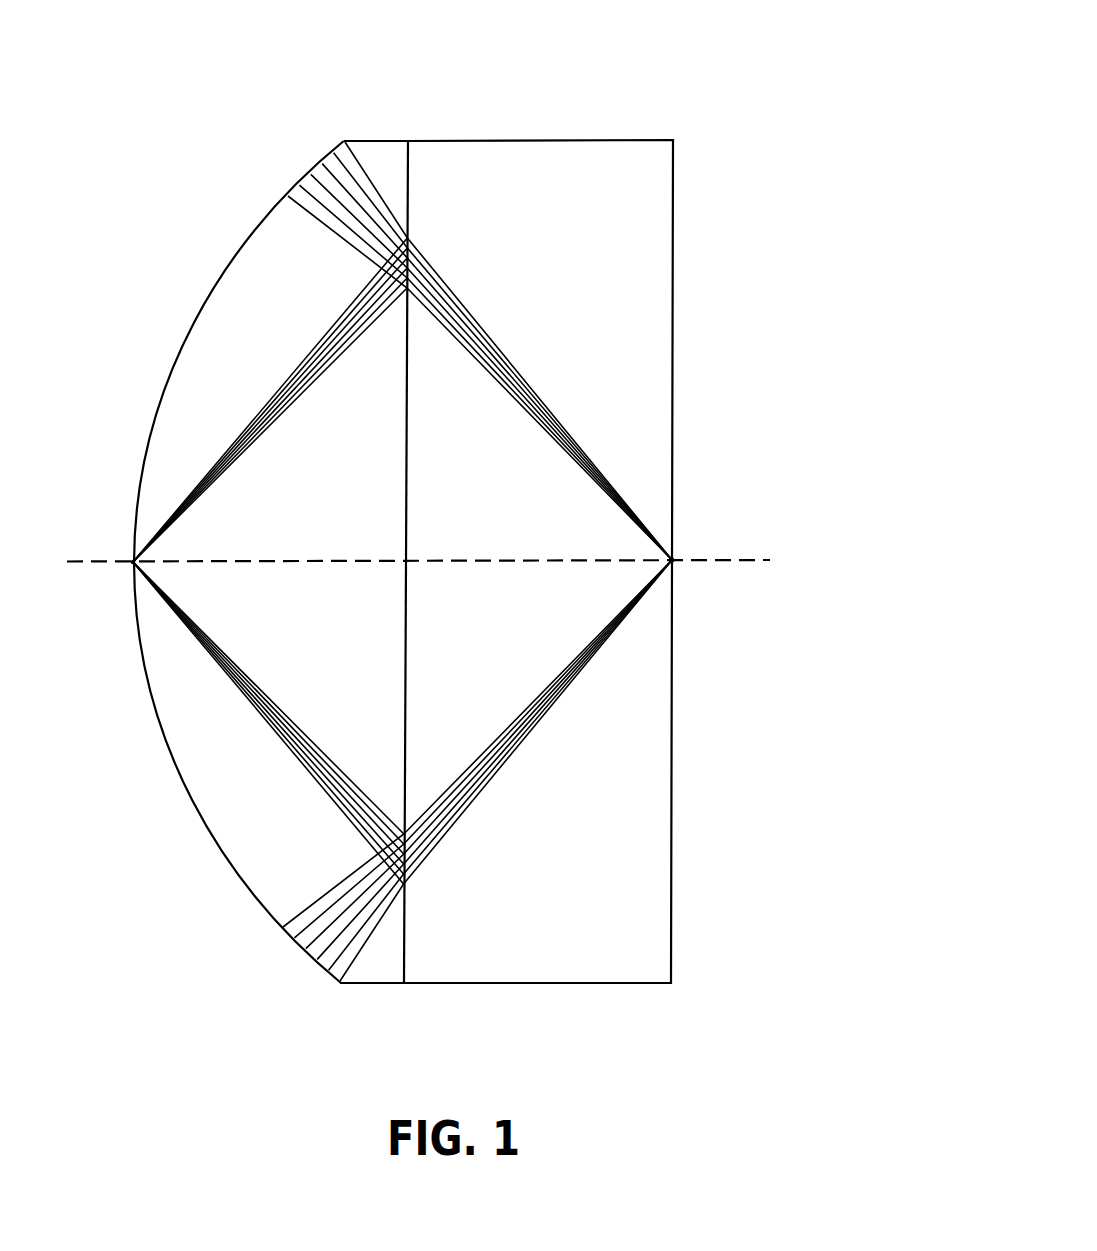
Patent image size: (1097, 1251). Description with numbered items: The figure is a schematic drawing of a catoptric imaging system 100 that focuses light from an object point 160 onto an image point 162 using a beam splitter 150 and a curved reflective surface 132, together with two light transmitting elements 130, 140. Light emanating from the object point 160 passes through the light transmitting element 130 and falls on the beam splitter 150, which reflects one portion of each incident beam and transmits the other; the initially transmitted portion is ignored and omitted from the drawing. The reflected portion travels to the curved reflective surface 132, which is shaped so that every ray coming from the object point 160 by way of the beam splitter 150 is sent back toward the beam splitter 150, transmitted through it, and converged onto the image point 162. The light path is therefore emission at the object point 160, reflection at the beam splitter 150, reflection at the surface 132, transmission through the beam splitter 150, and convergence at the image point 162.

The catoptric imaging system 100 is at (564, 82).
The light transmitting element 130 is at (176, 407).
The curved reflective surface 132 is at (199, 322).
The light transmitting element 140 is at (651, 728).
The beam splitter 150 is at (406, 667).
The object point 160 is at (132, 562).
The image point 162 is at (675, 557).